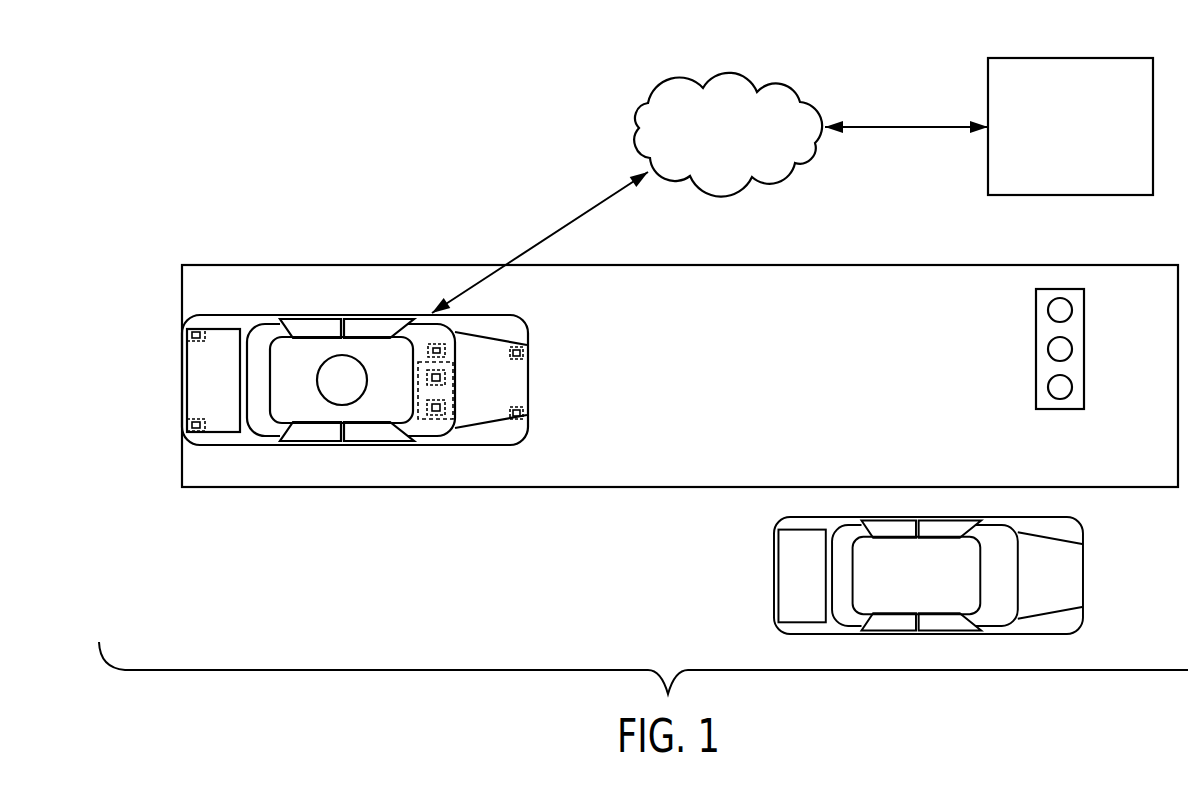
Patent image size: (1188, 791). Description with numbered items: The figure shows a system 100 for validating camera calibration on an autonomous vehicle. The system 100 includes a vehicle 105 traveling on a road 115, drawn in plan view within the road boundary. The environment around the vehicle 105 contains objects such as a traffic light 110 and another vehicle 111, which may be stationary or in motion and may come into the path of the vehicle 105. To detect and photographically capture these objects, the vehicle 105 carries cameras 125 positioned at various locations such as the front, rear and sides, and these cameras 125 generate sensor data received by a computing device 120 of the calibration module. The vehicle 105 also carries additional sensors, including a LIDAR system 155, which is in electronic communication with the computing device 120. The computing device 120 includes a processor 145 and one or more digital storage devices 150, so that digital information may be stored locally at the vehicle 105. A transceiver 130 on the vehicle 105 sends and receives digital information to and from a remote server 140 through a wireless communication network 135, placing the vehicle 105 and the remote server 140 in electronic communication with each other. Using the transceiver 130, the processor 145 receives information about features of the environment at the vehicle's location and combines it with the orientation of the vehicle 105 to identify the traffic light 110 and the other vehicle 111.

The system 100 is at (372, 120).
The vehicle 105 is at (258, 318).
The traffic light 110 is at (1036, 315).
The other vehicle 111 is at (1085, 562).
The road 115 is at (286, 472).
The computing device 120 is at (466, 354).
The camera 125 is at (392, 377).
The transceiver 130 is at (477, 356).
The wireless communication network 135 is at (633, 135).
The remote server 140 is at (1085, 144).
The processor 145 is at (505, 408).
The digital storage device 150 is at (469, 390).
The LIDAR system 155 is at (356, 447).